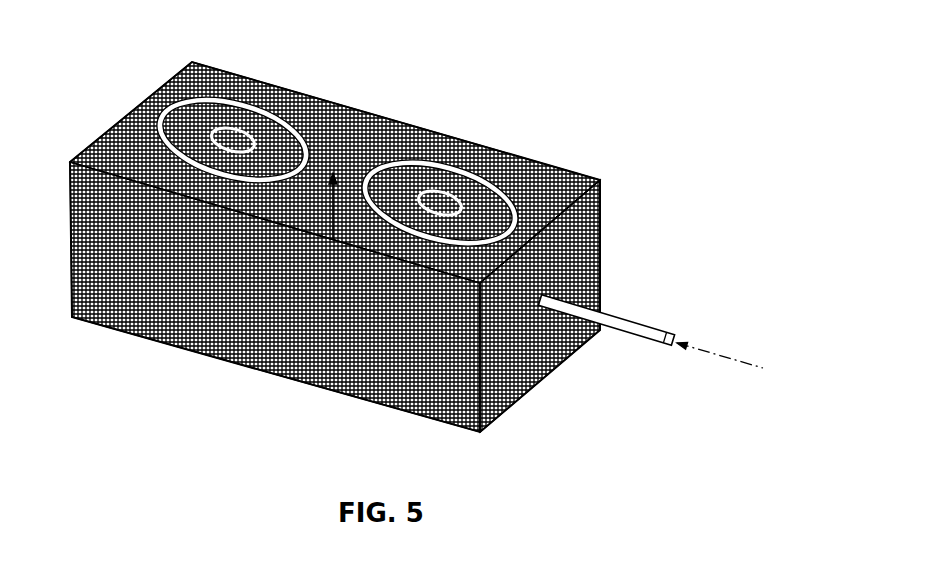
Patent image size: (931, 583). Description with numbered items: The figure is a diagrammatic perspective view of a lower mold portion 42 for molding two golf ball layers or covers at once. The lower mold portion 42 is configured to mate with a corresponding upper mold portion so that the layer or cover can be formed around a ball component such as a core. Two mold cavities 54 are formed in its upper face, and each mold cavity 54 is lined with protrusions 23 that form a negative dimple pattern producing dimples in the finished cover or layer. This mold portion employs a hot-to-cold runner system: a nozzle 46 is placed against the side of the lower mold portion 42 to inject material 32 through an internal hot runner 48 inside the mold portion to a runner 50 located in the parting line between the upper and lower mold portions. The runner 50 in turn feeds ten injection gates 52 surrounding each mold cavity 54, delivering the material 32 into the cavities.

The lower mold portion 42 is at (200, 330).
The mold cavity 54 is at (175, 122).
The injection gate 52 is at (203, 122).
The runner 50 is at (334, 172).
The protrusion 23 is at (443, 210).
The hot runner 48 is at (398, 292).
The nozzle 46 is at (645, 328).
The material 32 is at (730, 358).